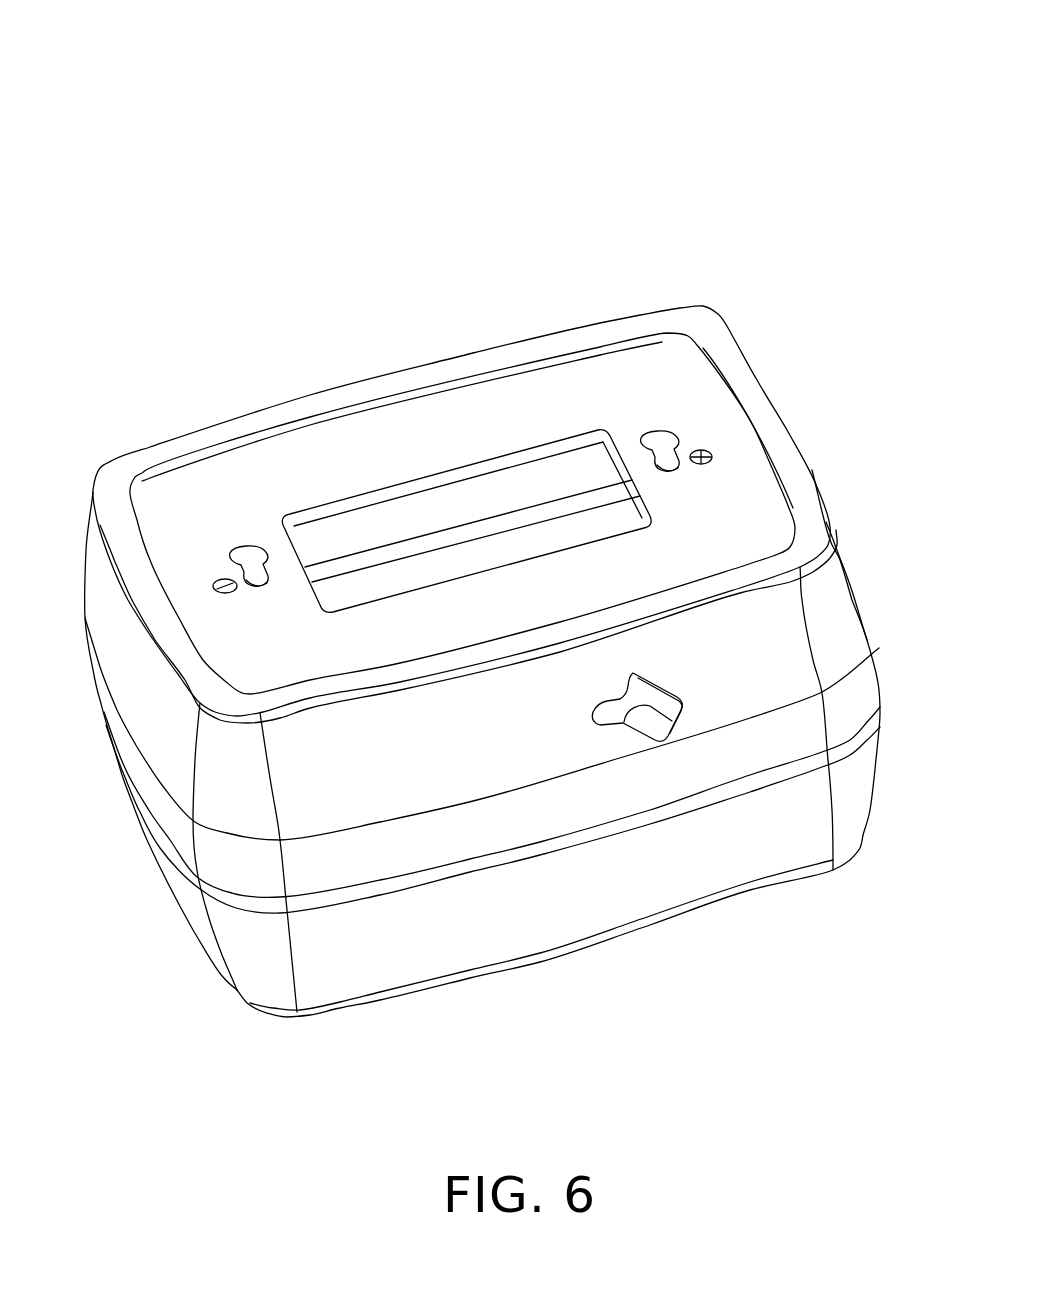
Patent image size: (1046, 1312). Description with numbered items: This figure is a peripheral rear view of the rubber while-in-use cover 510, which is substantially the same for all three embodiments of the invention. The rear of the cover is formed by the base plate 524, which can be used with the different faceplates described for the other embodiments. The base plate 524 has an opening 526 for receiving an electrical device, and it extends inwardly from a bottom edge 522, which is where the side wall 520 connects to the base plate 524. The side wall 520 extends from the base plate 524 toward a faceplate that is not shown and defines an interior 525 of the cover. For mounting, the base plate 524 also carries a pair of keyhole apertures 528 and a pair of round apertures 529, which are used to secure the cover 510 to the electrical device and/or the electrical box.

The cover 510 is at (357, 188).
The side wall 520 is at (333, 870).
The bottom edge 522 is at (625, 317).
The base plate 524 is at (355, 447).
The interior 525 is at (622, 725).
The opening 526 is at (470, 490).
The keyhole apertures 528 is at (250, 548).
The round apertures 529 is at (222, 582).